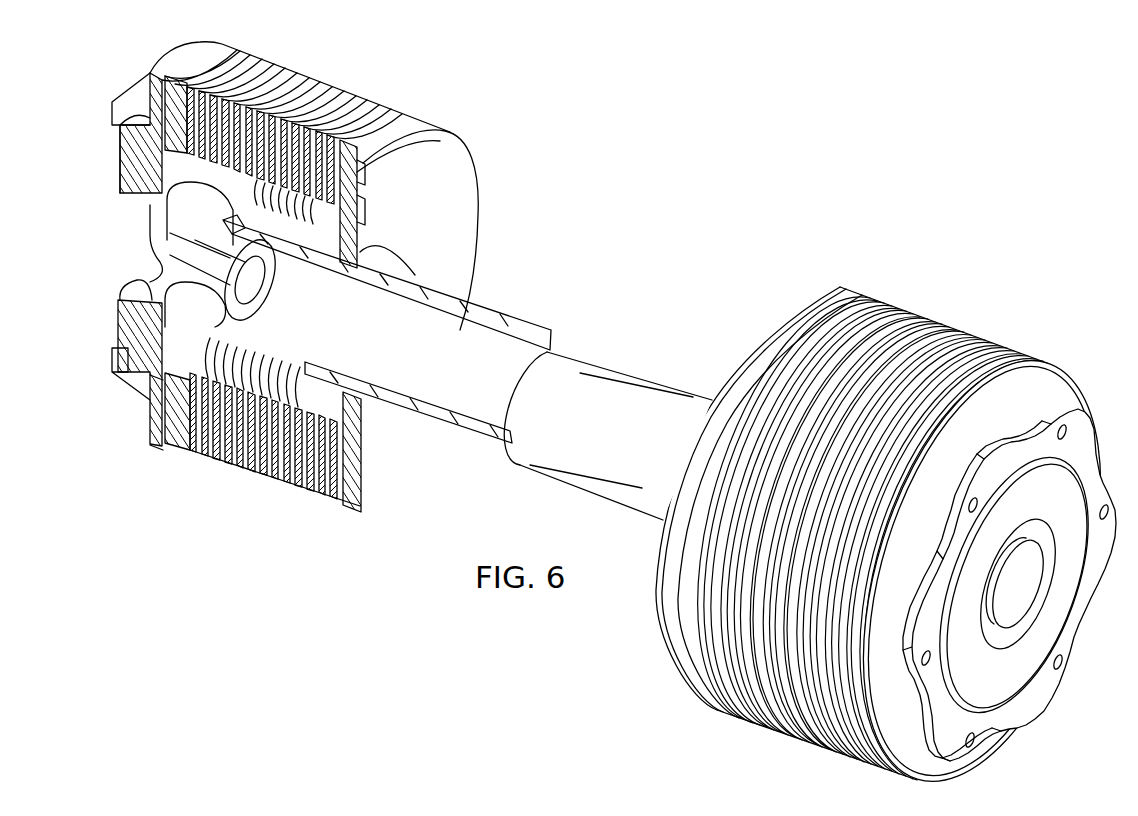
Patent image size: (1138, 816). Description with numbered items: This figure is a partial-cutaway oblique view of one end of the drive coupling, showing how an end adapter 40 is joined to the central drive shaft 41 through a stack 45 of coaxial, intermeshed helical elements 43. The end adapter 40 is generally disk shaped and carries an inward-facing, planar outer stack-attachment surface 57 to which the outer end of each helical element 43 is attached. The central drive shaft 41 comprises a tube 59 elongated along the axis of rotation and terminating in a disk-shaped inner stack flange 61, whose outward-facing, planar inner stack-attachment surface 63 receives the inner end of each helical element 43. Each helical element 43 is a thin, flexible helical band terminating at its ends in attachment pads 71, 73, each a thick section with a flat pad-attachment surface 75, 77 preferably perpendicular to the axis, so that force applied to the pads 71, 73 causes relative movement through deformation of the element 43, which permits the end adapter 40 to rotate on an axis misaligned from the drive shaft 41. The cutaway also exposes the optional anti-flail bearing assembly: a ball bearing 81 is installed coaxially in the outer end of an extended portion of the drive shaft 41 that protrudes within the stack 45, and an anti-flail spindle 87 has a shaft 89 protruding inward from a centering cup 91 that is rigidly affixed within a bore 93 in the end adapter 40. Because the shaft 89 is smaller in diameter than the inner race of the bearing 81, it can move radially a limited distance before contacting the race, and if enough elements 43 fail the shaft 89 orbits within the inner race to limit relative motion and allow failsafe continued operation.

The end adapter 40 is at (118, 320).
The central drive shaft 41 is at (545, 334).
The helical element 43 is at (283, 68).
The stack 45 is at (153, 457).
The outer stack-attachment surface 57 is at (163, 437).
The tube 59 is at (616, 378).
The inner stack flange 61 is at (470, 213).
The inner stack-attachment surface 63 is at (357, 176).
The attachment pad 71 is at (350, 145).
The attachment pad 73 is at (160, 397).
The pad-attachment surface 75 is at (357, 205).
The pad-attachment surface 77 is at (163, 380).
The ball bearing 81 is at (274, 271).
The anti-flail spindle 87 is at (149, 244).
The shaft 89 is at (272, 308).
The centering cup 91 is at (137, 280).
The bore 93 is at (140, 205).